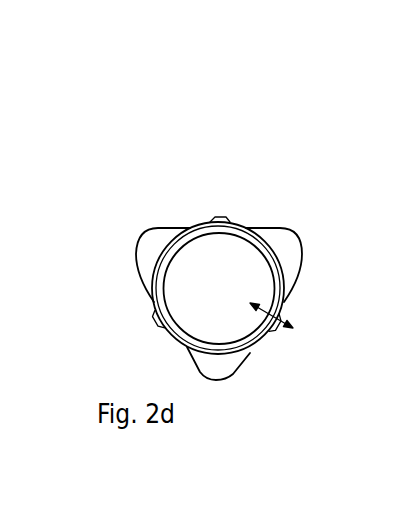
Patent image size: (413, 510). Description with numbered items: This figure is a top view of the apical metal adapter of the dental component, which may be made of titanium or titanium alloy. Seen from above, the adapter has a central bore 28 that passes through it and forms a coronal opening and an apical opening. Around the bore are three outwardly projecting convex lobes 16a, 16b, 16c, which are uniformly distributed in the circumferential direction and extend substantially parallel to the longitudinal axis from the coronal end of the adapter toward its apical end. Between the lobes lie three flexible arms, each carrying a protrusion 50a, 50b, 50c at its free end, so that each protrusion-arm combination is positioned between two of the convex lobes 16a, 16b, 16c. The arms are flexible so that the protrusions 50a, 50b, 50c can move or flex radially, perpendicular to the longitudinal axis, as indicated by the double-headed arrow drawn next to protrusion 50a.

The central bore 28 is at (228, 297).
The convex lobe 16a is at (215, 367).
The convex lobe 16b is at (153, 238).
The convex lobe 16c is at (283, 240).
The protrusion 50a is at (287, 313).
The protrusion 50b is at (160, 323).
The protrusion 50c is at (222, 218).